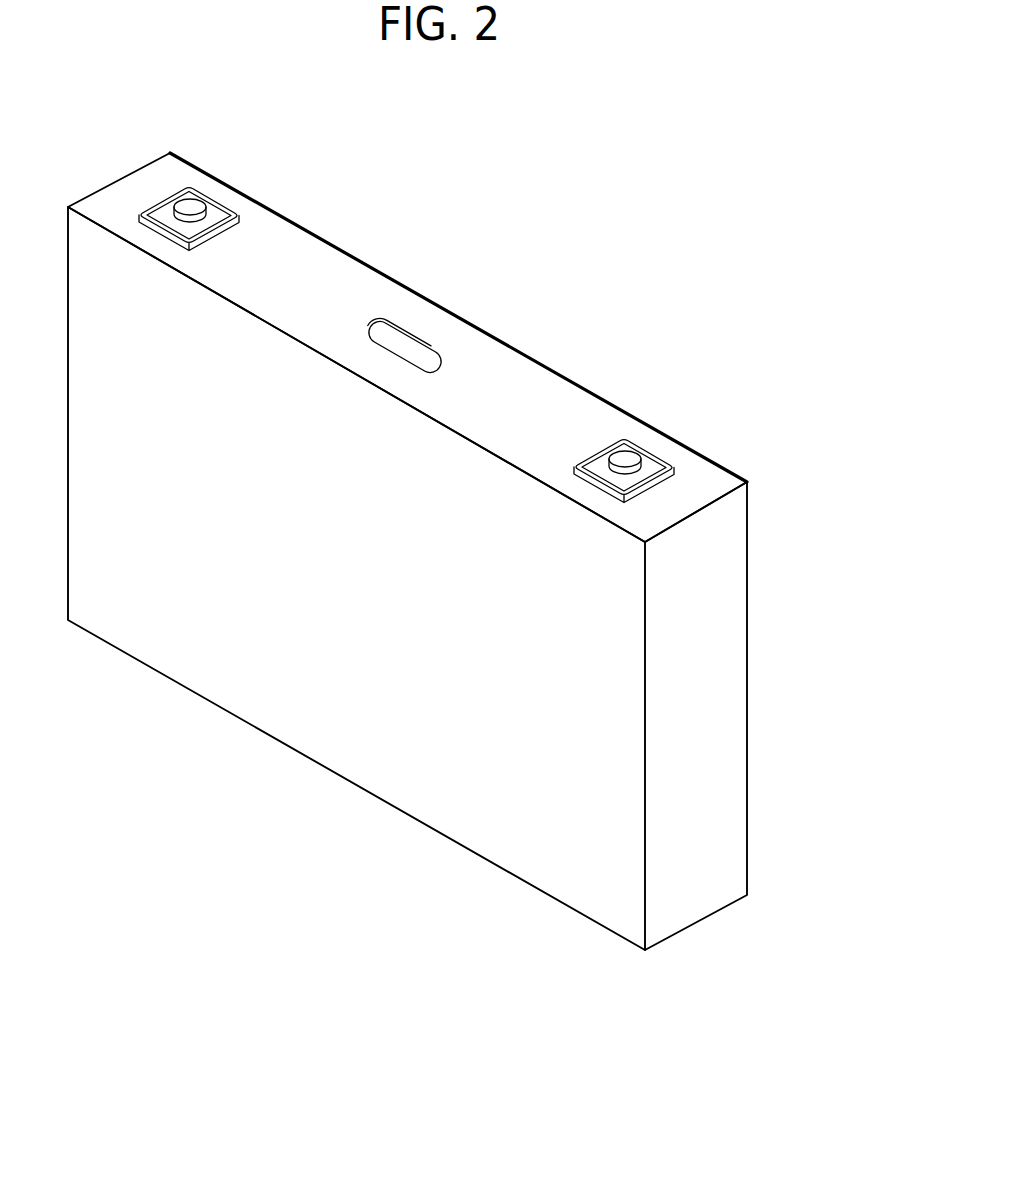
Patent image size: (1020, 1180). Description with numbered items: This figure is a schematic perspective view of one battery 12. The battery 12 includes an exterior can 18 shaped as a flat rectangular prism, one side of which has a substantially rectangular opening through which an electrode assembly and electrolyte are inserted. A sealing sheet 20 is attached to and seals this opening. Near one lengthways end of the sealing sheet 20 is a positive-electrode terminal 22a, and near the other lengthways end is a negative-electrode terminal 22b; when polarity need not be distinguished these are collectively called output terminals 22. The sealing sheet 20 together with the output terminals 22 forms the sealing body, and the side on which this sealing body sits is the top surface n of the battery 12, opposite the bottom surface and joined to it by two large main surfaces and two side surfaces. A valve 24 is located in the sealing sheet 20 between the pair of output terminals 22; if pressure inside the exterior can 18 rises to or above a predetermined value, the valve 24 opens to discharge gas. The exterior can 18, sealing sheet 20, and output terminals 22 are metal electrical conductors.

The battery 12 is at (283, 913).
The exterior can 18 is at (502, 850).
The sealing sheet 20 is at (710, 488).
The top surface n is at (318, 270).
The output terminals 22 is at (453, 302).
The positive-electrode terminal 22a is at (624, 440).
The negative-electrode terminal 22b is at (188, 188).
The valve 24 is at (405, 348).